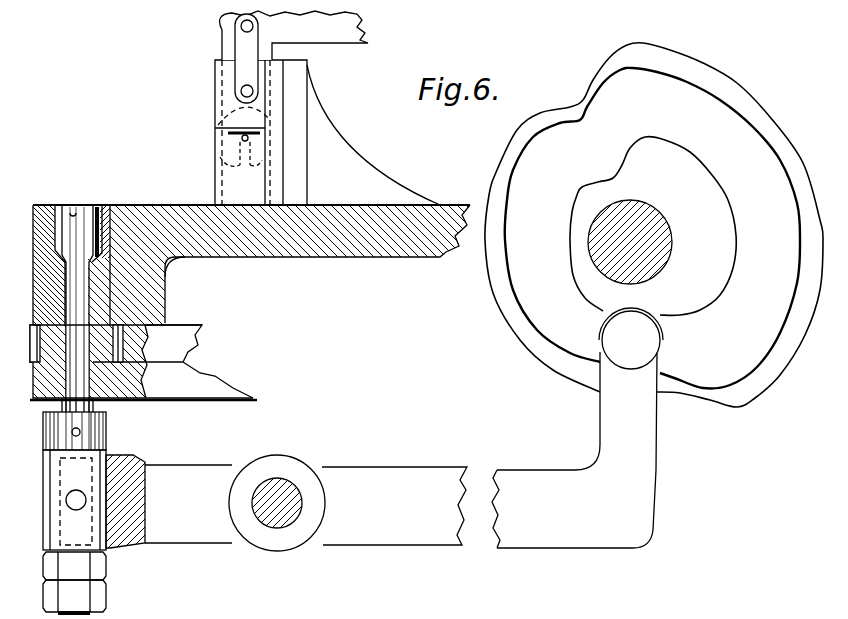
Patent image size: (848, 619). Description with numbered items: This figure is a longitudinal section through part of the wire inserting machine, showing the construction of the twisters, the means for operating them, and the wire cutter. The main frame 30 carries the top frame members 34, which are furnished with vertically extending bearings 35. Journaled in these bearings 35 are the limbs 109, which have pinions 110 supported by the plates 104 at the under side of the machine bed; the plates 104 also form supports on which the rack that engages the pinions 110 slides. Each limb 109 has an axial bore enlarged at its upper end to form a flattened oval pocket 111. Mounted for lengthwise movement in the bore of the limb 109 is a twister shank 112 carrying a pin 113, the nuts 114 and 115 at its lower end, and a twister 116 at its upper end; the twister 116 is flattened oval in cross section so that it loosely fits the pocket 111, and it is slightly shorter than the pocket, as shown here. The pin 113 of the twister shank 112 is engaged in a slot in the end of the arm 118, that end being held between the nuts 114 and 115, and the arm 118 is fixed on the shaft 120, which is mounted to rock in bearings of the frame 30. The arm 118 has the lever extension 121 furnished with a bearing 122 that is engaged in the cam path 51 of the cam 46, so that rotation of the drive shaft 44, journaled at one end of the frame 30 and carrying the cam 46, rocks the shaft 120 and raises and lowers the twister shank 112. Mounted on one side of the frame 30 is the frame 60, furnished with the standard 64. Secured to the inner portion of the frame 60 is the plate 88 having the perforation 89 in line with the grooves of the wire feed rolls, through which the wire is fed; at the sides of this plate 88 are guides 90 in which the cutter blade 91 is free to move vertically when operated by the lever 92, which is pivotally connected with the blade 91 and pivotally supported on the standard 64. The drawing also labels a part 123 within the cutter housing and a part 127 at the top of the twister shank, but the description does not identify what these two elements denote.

The main frame 30 is at (438, 259).
The top frame members 34 is at (157, 205).
The vertically extending bearings 35 is at (168, 263).
The drive shaft 44 is at (662, 244).
The cam 46 is at (693, 60).
The cam path 51 is at (750, 130).
The frame 60 is at (429, 207).
The standard 64 is at (347, 143).
The plate 88 is at (223, 163).
The perforation 89 is at (265, 162).
The guides 90 is at (270, 93).
The cutter blade 91 is at (236, 107).
The lever 92 is at (361, 31).
The plates 104 is at (233, 390).
The limbs 109 is at (55, 205).
The pinions 110 is at (120, 331).
The pockets 111 is at (183, 304).
The twister shanks 112 is at (92, 404).
The pins 113 is at (77, 506).
The nuts 114 is at (107, 423).
The nuts 115 is at (106, 568).
The twisters 116 is at (87, 225).
The arm 118 is at (208, 464).
The shaft 120 is at (282, 517).
The lever extension 121 is at (405, 467).
The bearing 122 is at (663, 348).
The pivot pin 123 is at (230, 148).
The valve rod 127 is at (73, 204).